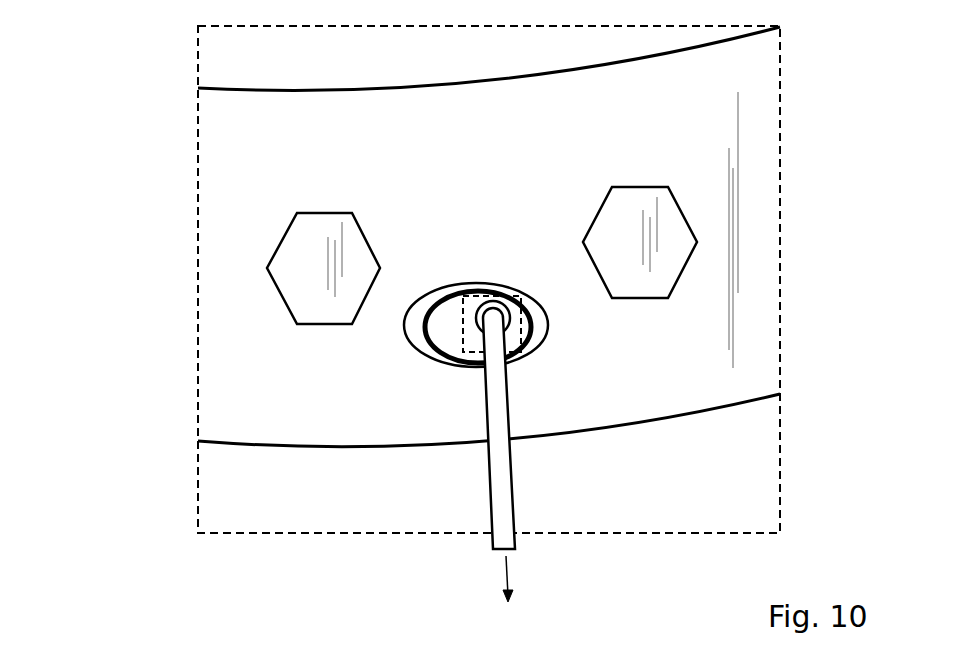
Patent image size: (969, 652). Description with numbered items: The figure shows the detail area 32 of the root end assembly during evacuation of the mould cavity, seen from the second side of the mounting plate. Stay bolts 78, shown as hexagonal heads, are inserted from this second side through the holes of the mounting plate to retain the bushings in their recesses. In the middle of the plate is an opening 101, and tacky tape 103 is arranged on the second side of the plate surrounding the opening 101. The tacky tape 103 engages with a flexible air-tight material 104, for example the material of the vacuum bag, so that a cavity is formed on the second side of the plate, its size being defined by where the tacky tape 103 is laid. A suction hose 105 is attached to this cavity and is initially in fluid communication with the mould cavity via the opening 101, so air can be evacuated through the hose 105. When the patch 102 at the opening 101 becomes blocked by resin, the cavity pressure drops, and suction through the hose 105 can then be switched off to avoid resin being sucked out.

The detail area 32 is at (60, 48).
The stay bolt 78 is at (312, 280).
The opening 101 is at (473, 300).
The patch 102 is at (448, 356).
The tacky tape 103 is at (530, 328).
The flexible air-tight material 104 is at (517, 366).
The suction hose 105 is at (493, 520).